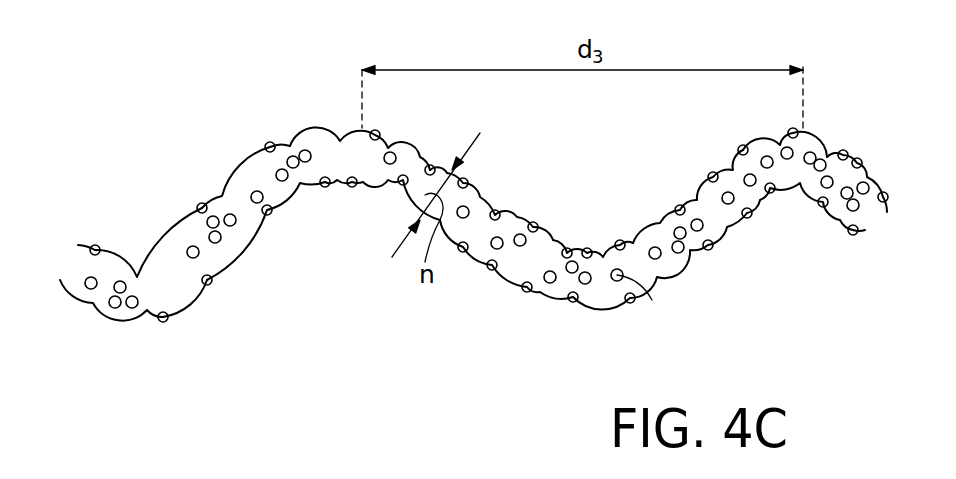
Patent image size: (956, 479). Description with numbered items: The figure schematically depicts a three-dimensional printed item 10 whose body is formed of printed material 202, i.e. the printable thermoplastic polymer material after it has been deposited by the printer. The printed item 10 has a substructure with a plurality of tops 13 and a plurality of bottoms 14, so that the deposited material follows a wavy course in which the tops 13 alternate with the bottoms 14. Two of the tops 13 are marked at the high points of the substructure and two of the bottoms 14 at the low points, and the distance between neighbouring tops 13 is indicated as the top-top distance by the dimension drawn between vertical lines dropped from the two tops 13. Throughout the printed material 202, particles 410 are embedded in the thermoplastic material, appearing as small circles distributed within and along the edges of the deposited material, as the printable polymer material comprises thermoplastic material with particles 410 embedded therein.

The 3D printed item 10 is at (300, 290).
The tops 13 is at (312, 125).
The bottoms 14 is at (127, 259).
The 3D printed material 202 is at (515, 210).
The particles 410 is at (385, 159).